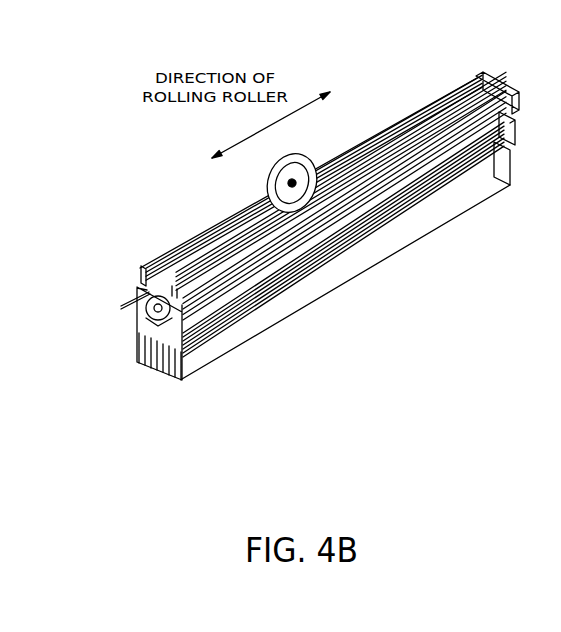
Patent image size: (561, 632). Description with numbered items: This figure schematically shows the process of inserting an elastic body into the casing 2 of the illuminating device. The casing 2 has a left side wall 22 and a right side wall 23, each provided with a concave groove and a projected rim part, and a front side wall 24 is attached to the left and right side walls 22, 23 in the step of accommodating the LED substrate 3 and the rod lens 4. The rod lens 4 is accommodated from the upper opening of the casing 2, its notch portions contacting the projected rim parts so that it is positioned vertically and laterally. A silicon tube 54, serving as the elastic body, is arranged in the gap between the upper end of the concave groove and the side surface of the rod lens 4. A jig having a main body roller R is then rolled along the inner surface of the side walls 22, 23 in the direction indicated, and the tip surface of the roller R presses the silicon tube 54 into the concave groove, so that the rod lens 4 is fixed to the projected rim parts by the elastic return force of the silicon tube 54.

The casing 2 is at (197, 226).
The LED substrate 3 is at (140, 363).
The rod lens 4 is at (155, 313).
The left side wall 22 is at (450, 173).
The right side wall 23 is at (405, 120).
The front side wall 24 is at (503, 73).
The silicon tube 54 is at (125, 302).
The main body roller R is at (268, 180).